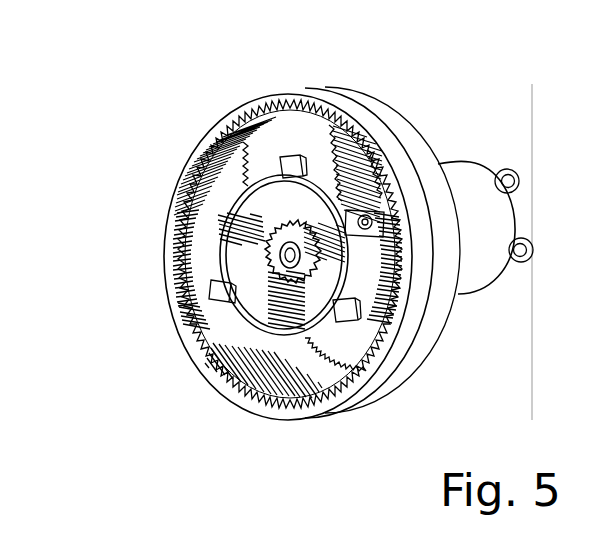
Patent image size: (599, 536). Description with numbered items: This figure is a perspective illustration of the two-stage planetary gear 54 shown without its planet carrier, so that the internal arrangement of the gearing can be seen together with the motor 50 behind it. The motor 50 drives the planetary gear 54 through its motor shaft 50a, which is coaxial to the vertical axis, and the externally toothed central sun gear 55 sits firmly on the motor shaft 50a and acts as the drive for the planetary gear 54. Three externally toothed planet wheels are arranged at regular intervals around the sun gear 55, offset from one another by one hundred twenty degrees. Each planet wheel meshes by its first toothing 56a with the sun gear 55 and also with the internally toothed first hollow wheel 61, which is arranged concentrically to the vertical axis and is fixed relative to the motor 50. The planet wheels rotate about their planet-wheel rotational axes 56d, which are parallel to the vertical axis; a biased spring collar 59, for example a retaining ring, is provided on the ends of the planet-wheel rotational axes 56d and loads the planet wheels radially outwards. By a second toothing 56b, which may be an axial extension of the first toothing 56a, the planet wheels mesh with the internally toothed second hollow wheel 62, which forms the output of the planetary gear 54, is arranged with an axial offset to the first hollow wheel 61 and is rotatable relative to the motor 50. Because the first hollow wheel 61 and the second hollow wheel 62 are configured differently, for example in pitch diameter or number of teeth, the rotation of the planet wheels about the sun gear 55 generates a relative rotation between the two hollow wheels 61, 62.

The motor 50 is at (478, 273).
The motor shaft 50a is at (289, 255).
The planetary gear 54 is at (147, 285).
The sun gear 55 is at (262, 237).
The first toothing 56a is at (352, 222).
The second toothing 56b is at (337, 160).
The planet-wheel rotational axis 56d is at (284, 162).
The spring collar 59 is at (238, 205).
The first hollow wheel 61 is at (432, 343).
The second hollow wheel 62 is at (397, 367).